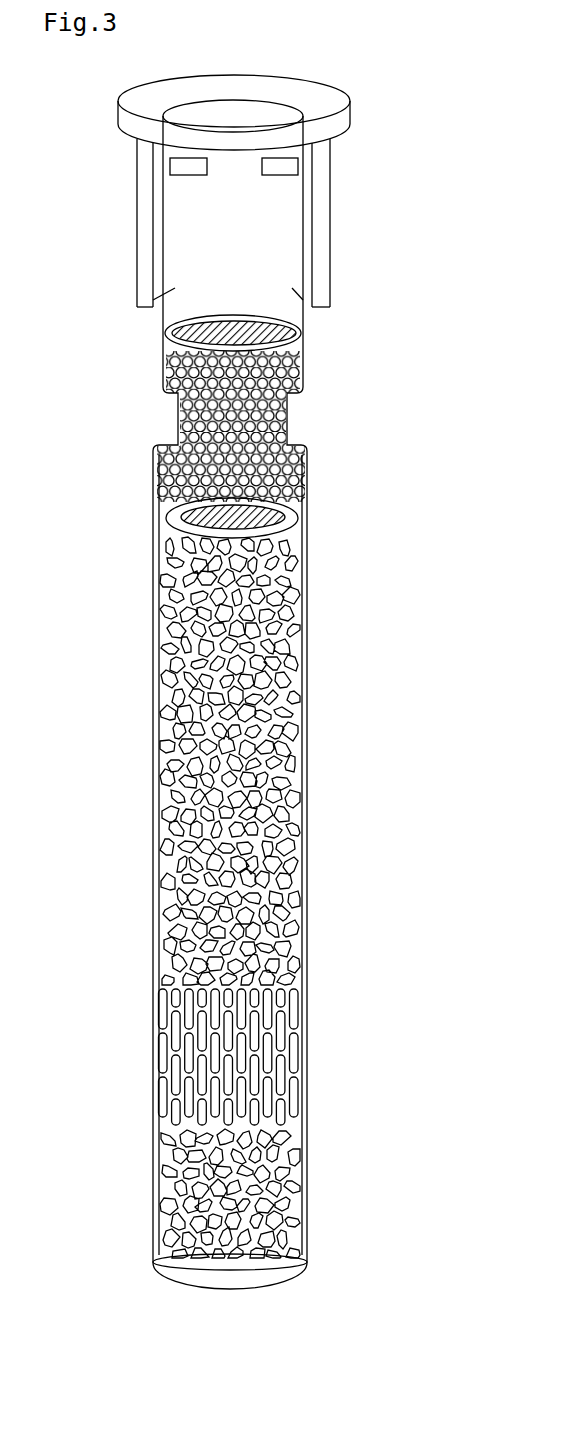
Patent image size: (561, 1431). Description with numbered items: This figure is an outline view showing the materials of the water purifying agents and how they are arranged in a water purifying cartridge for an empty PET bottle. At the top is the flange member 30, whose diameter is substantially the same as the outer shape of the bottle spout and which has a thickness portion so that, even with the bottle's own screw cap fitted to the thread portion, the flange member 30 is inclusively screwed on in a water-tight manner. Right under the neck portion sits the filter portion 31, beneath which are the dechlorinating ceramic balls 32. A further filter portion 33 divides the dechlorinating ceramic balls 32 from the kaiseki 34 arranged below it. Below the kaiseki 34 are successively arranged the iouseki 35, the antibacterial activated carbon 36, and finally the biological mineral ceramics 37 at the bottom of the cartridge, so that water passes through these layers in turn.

The flange member 30 is at (317, 122).
The filter portion 31 is at (305, 328).
The dechlorinating ceramic balls 32 is at (288, 417).
The filter portion 33 is at (300, 518).
The kaiseki 34 is at (310, 667).
The iouseki 35 is at (305, 758).
The antibacterial activated carbon 36 is at (300, 1047).
The biological mineral ceramics 37 is at (257, 1197).